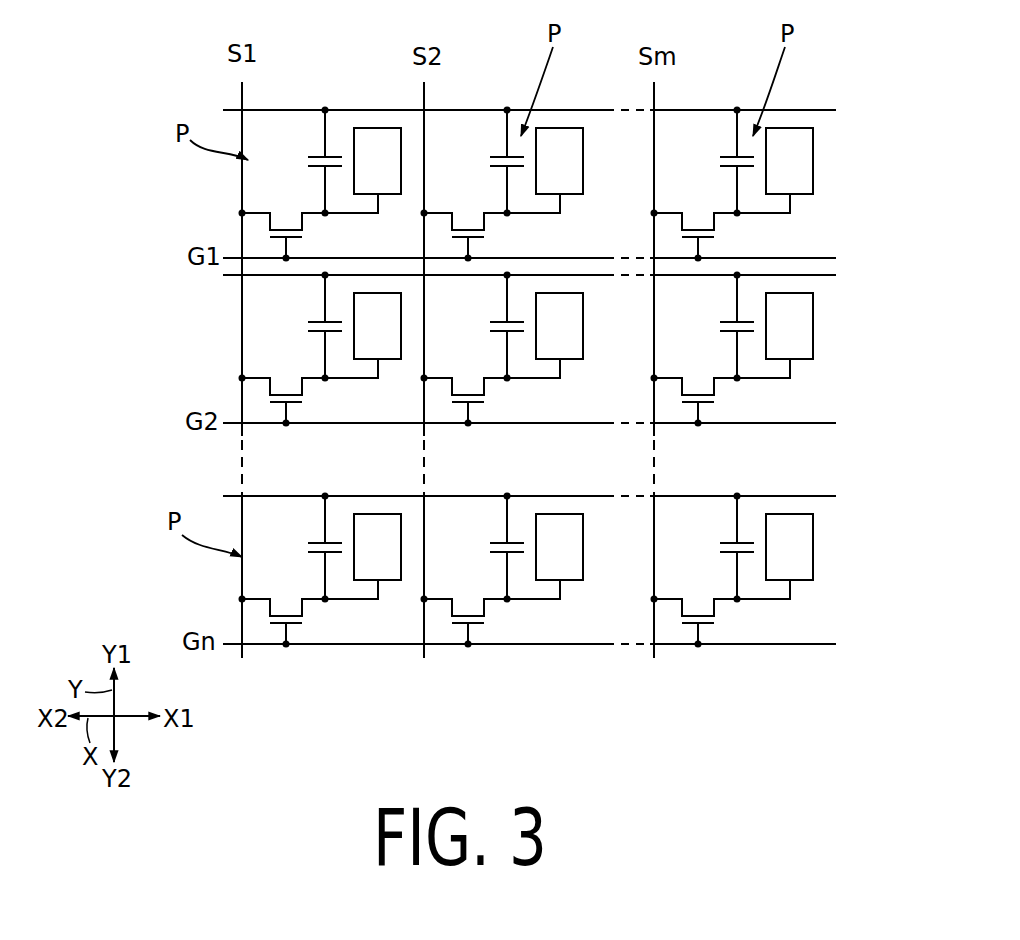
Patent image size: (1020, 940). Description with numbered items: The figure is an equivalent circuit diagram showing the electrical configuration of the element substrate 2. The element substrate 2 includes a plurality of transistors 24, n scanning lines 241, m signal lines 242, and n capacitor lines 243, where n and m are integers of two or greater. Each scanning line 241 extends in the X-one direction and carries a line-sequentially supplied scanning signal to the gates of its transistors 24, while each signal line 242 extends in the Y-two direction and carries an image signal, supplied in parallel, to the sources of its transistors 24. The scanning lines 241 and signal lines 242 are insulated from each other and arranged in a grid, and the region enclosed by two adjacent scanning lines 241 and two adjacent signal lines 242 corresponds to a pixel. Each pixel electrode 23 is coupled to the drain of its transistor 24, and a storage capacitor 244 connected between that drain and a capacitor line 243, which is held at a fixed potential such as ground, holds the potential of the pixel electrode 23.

The element substrate 2 is at (851, 72).
The pixel electrode 23 is at (381, 128).
The transistor 24 is at (322, 237).
The scanning line 241 is at (233, 257).
The signal line 242 is at (245, 100).
The capacitor line 243 is at (228, 107).
The storage capacitor 244 is at (296, 160).